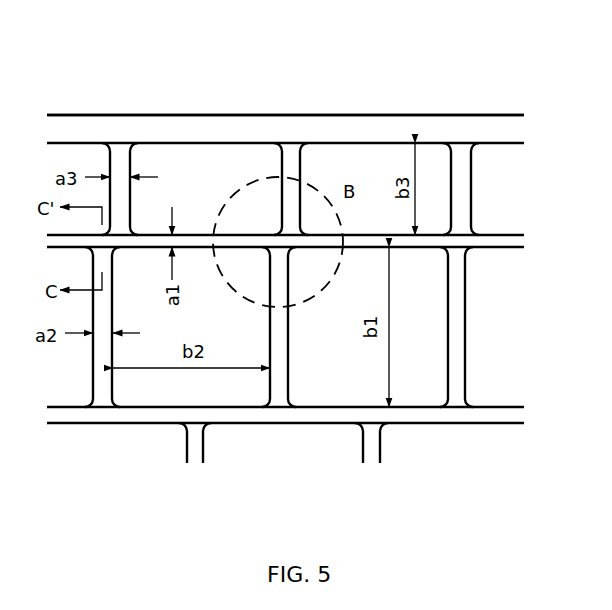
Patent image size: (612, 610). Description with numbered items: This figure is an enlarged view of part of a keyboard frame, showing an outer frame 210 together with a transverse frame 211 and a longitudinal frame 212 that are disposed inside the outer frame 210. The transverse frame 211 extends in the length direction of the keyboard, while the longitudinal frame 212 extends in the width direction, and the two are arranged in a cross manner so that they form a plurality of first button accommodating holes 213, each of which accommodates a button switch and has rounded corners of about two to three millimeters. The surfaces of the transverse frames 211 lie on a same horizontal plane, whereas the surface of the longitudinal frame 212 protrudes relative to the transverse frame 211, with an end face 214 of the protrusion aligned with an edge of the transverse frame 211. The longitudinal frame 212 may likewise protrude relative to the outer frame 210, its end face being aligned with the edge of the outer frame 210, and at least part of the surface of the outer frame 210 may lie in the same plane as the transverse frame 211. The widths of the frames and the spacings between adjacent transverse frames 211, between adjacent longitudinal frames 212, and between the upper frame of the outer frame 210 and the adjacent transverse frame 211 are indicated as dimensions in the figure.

The outer frame 210 is at (247, 130).
The transverse frame 211 is at (503, 245).
The longitudinal frame 212 is at (463, 188).
The first button accommodating hole 213 is at (368, 160).
The end face 214 is at (464, 148).